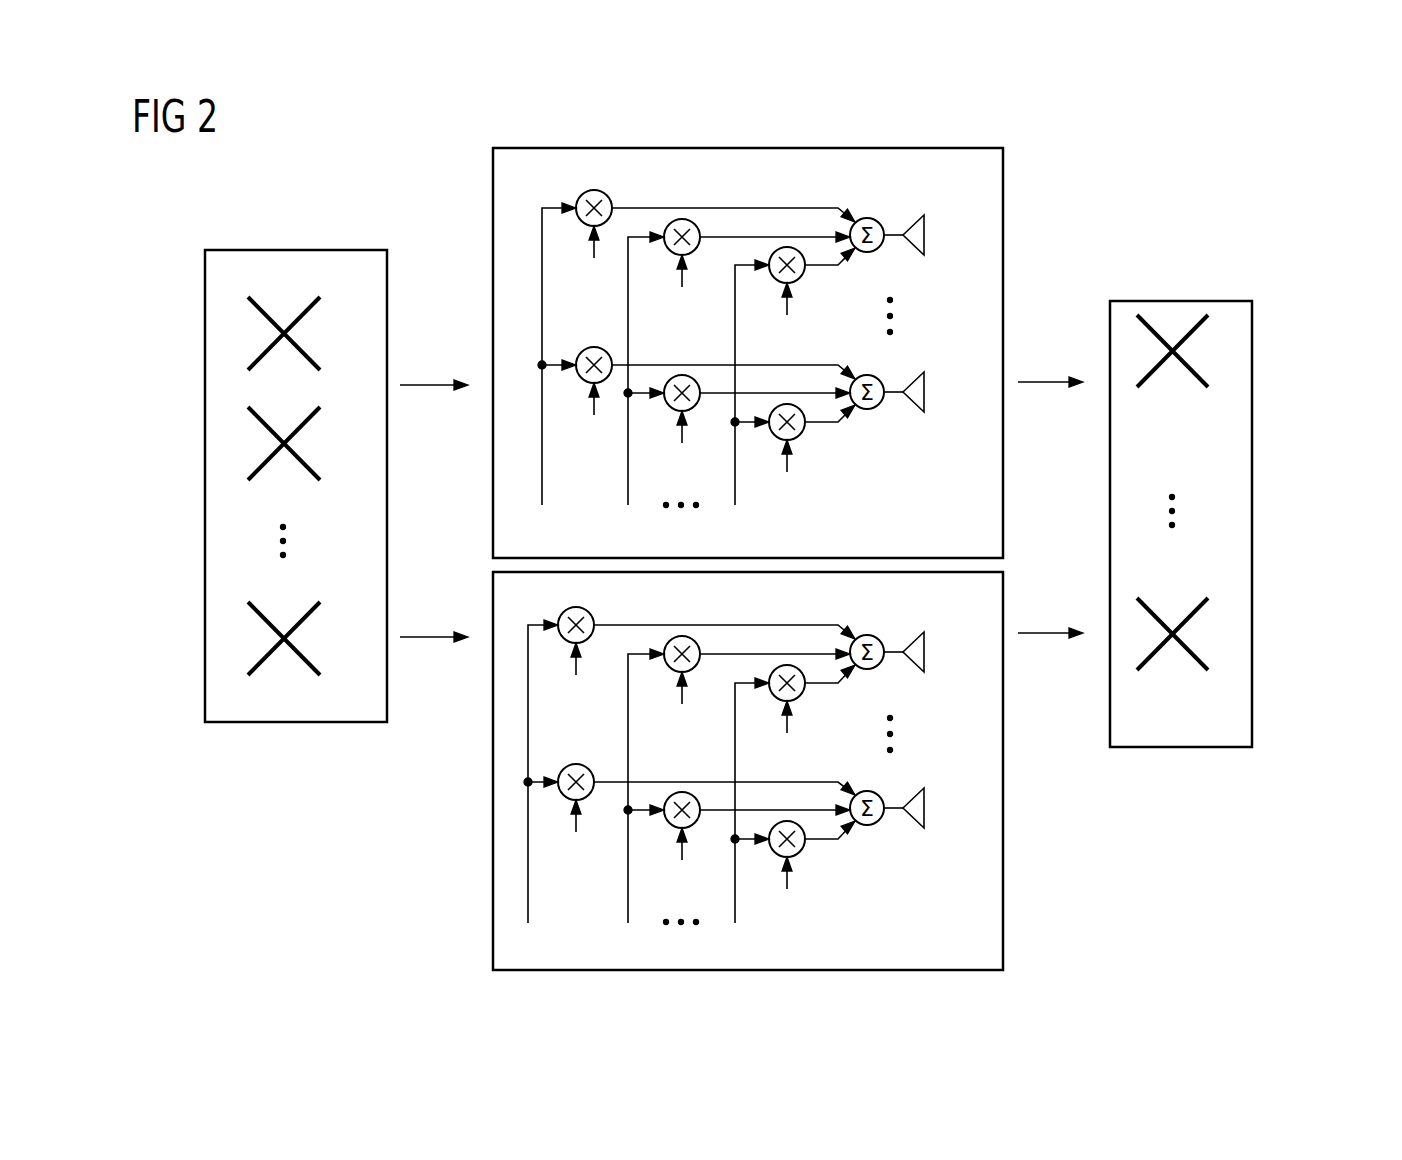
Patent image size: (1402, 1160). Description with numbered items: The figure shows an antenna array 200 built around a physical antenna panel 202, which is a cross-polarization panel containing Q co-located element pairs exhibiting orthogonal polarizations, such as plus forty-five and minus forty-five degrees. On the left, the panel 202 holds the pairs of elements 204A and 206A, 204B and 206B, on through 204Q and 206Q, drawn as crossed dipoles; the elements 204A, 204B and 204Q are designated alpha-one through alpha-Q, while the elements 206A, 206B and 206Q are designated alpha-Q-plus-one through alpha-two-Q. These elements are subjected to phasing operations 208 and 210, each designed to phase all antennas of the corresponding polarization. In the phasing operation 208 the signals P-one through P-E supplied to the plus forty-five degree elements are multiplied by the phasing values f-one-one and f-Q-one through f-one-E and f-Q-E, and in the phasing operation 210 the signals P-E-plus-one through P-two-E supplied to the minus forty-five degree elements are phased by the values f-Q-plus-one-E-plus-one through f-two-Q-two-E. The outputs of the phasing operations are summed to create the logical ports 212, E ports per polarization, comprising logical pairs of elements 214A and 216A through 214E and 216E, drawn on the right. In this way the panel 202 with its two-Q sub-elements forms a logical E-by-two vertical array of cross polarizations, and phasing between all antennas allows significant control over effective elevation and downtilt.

The array 200 is at (1242, 150).
The physical antenna panel 202 is at (205, 488).
The element 204A is at (312, 306).
The element 204B is at (312, 416).
The element 204Q is at (312, 616).
The element 206A is at (300, 362).
The element 206B is at (300, 472).
The element 206Q is at (300, 667).
The phasing operation 208 is at (493, 237).
The phasing operation 210 is at (493, 785).
The logical ports 212 is at (1252, 522).
The logical element 214A is at (1153, 336).
The logical element 214E is at (1153, 620).
The logical element 216A is at (1192, 365).
The logical element 216E is at (1192, 648).